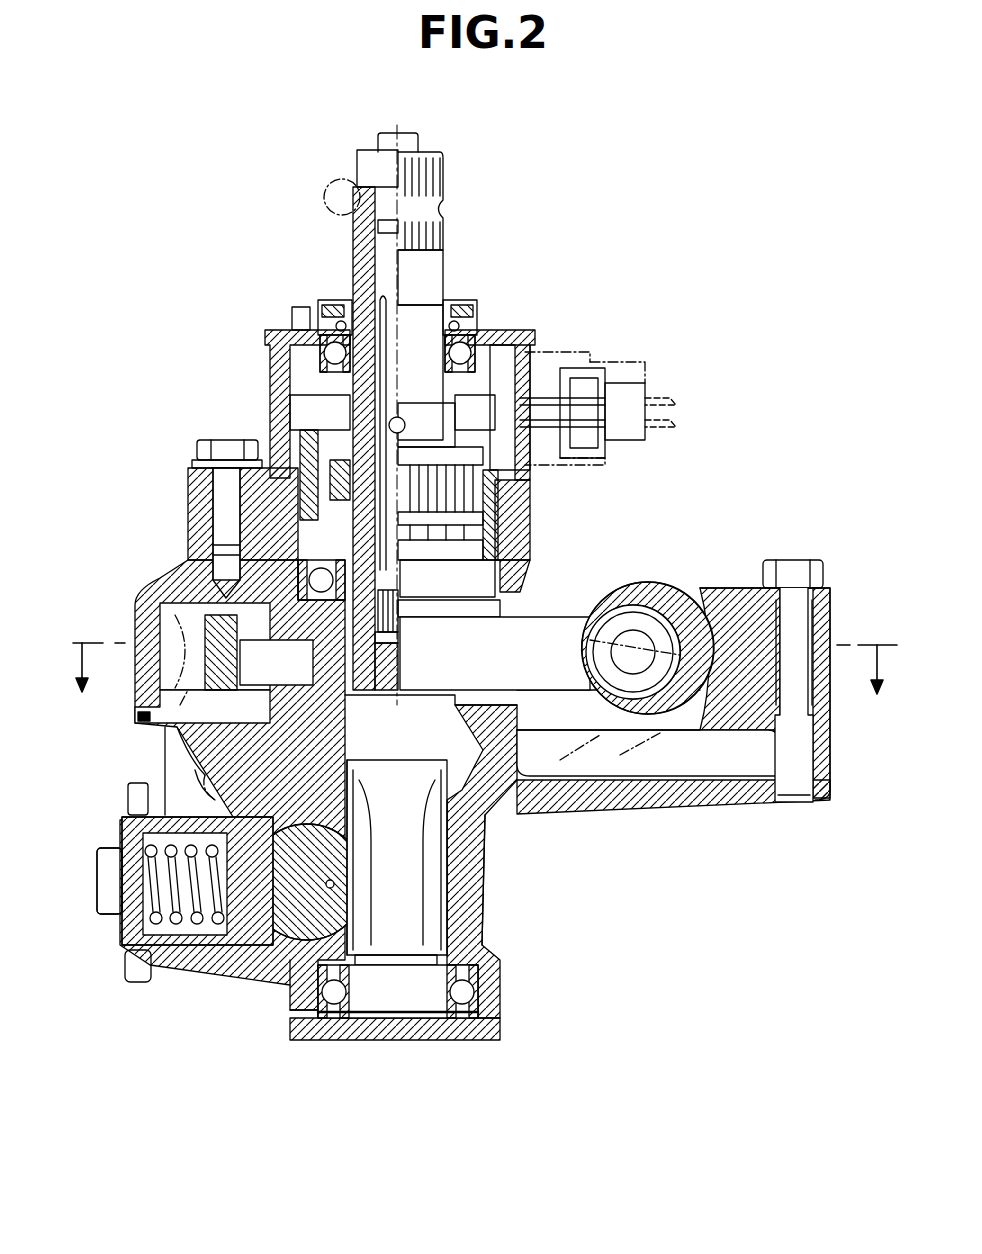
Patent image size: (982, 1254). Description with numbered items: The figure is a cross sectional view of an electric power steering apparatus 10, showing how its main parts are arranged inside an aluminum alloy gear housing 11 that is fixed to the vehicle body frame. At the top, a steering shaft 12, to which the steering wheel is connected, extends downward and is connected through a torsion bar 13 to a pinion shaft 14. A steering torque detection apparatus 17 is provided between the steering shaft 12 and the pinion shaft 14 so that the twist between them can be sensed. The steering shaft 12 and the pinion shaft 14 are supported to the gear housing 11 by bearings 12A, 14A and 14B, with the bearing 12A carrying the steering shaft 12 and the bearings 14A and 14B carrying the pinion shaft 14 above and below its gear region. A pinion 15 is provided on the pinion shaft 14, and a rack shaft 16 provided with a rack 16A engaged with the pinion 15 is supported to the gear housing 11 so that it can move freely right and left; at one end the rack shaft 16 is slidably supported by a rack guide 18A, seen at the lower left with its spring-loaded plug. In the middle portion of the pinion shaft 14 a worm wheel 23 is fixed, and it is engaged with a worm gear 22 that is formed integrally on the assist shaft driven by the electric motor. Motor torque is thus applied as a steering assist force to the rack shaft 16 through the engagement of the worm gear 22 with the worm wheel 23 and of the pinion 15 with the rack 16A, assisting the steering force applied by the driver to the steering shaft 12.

The electric power steering apparatus 10 is at (595, 245).
The gear housing 11 is at (832, 618).
The steering shaft 12 is at (370, 234).
The bearing 12A is at (330, 353).
The torsion bar 13 is at (390, 298).
The pinion shaft 14 is at (350, 553).
The bearing 14A is at (298, 576).
The bearing 14B is at (325, 1020).
The pinion 15 is at (455, 890).
The rack shaft 16 is at (288, 935).
The rack 16A is at (365, 873).
The steering torque detection apparatus 17 is at (252, 438).
The rack guide 18A is at (225, 935).
The worm gear 22 is at (653, 622).
The worm wheel 23 is at (555, 632).